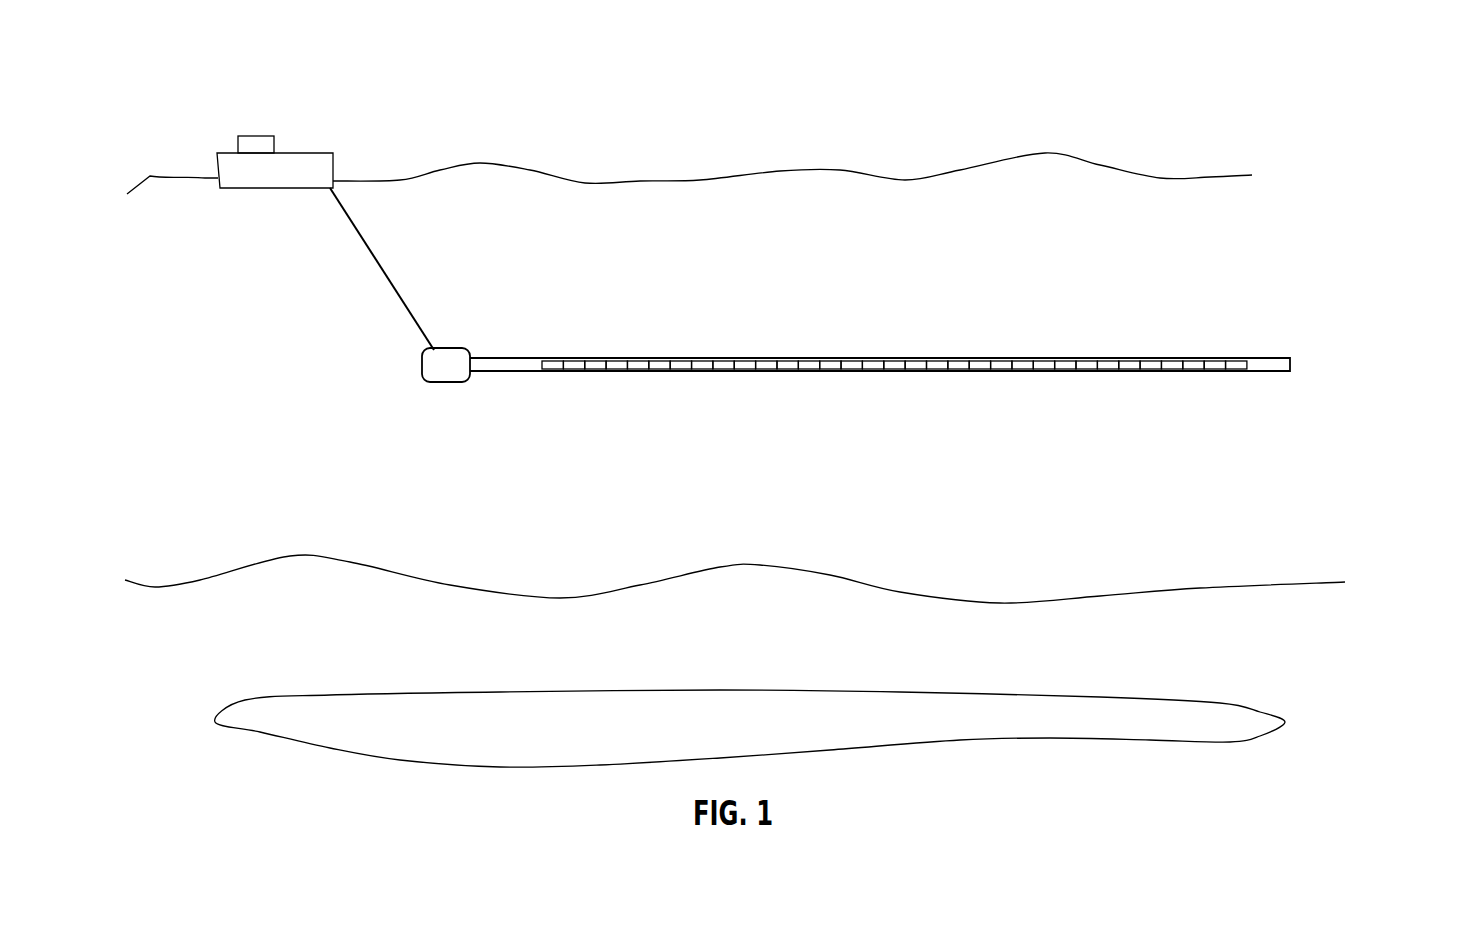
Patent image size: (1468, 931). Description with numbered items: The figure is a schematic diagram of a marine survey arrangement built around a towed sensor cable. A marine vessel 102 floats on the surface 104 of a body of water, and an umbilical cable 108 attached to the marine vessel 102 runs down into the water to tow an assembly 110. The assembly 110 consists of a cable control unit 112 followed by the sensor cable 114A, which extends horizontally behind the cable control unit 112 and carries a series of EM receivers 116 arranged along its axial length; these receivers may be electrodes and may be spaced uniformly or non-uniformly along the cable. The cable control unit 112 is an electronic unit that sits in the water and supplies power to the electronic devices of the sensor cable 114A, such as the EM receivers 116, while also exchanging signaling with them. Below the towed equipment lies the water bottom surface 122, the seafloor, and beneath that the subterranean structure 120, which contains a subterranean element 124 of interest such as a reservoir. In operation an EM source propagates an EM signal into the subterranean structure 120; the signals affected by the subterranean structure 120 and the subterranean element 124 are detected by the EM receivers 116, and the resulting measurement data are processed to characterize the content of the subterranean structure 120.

The marine vessel 102 is at (300, 152).
The surface of body of water 104 is at (843, 170).
The umbilical cable 108 is at (387, 272).
The assembly 110 is at (856, 383).
The cable control unit 112 is at (465, 348).
The sensor cable 114A is at (1288, 328).
The EM receivers 116 is at (720, 358).
The subterranean structure 120 is at (1348, 582).
The water bottom surface 122 is at (1073, 595).
The subterranean element 124 is at (925, 690).